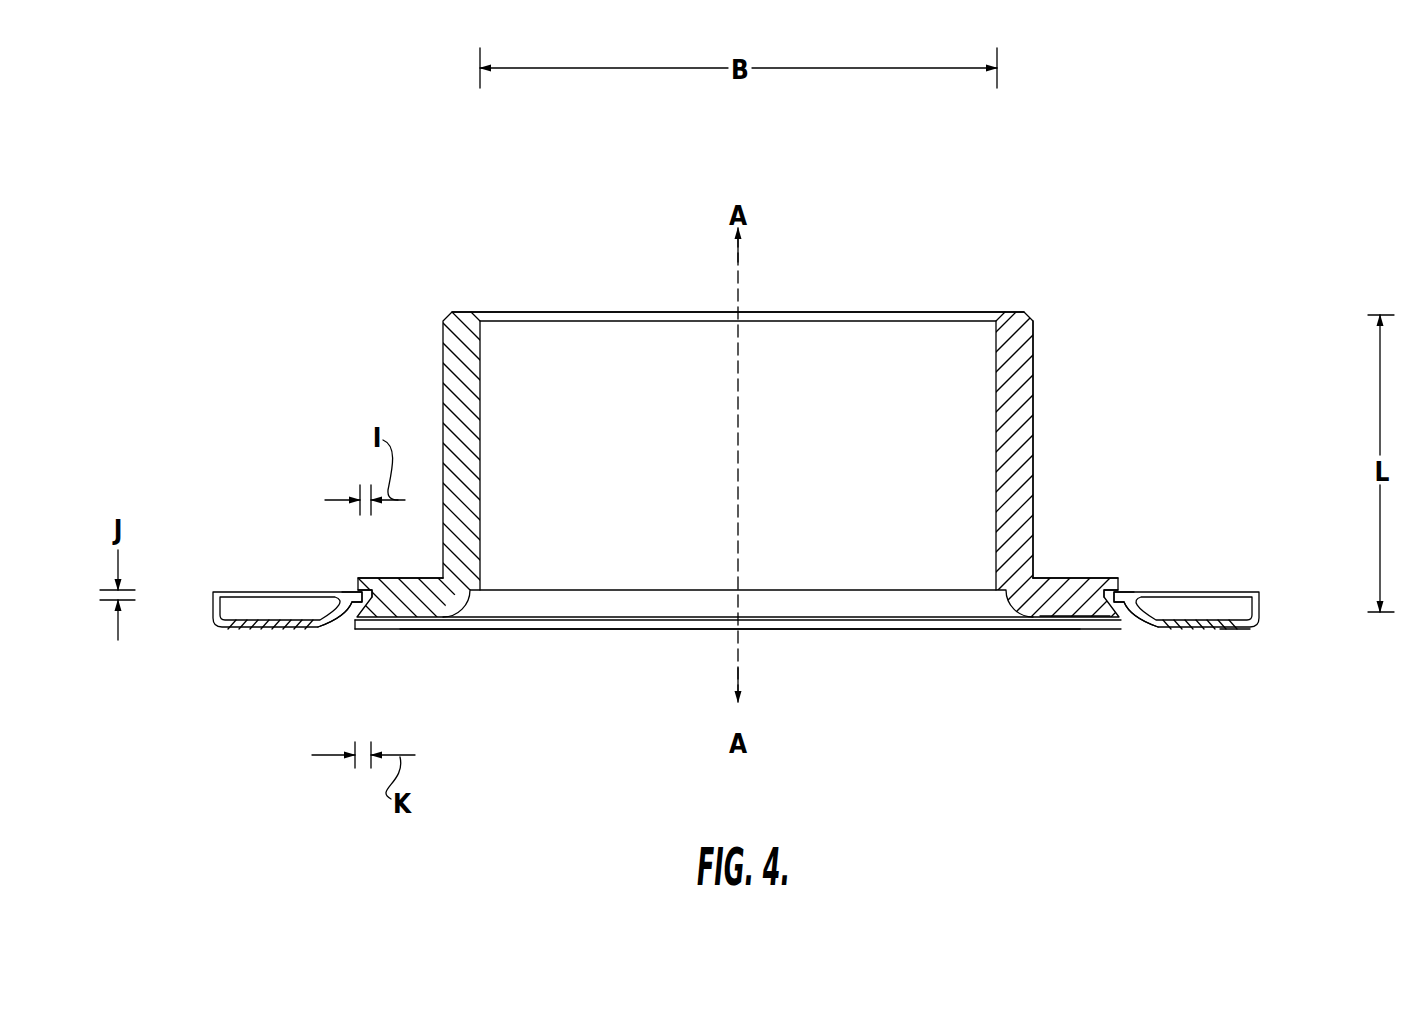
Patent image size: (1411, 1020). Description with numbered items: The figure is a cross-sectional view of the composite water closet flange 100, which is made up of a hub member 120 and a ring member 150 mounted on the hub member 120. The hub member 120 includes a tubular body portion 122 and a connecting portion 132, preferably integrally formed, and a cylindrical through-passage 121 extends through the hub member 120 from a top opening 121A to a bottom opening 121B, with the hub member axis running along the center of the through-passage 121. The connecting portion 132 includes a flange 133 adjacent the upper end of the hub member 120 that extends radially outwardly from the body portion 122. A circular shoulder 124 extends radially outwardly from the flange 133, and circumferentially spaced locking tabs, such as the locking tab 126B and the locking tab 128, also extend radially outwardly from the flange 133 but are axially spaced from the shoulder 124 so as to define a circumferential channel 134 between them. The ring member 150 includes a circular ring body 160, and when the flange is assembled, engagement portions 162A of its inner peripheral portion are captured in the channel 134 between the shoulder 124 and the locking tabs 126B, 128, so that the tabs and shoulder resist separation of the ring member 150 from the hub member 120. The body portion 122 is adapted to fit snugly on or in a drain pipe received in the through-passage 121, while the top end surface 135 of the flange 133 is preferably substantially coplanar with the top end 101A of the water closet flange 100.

The water closet flange 100 is at (1028, 180).
The hub member 120 is at (1032, 373).
The through-passage 121 is at (858, 350).
The top opening 121A is at (600, 632).
The bottom opening 121B is at (650, 290).
The tubular body portion 122 is at (1015, 452).
The circular shoulder 124 is at (355, 615).
The locking tab 126B is at (360, 580).
The locking tab 128 is at (1118, 597).
The connecting portion 132 is at (1106, 546).
The flange 133 is at (1058, 602).
The circumferential channel 134 is at (374, 596).
The top end surface 135 is at (1068, 620).
The ring member 150 is at (392, 628).
The circular ring body 160 is at (1183, 624).
The engagement portions 162A is at (350, 593).
The top end 101A is at (1230, 655).